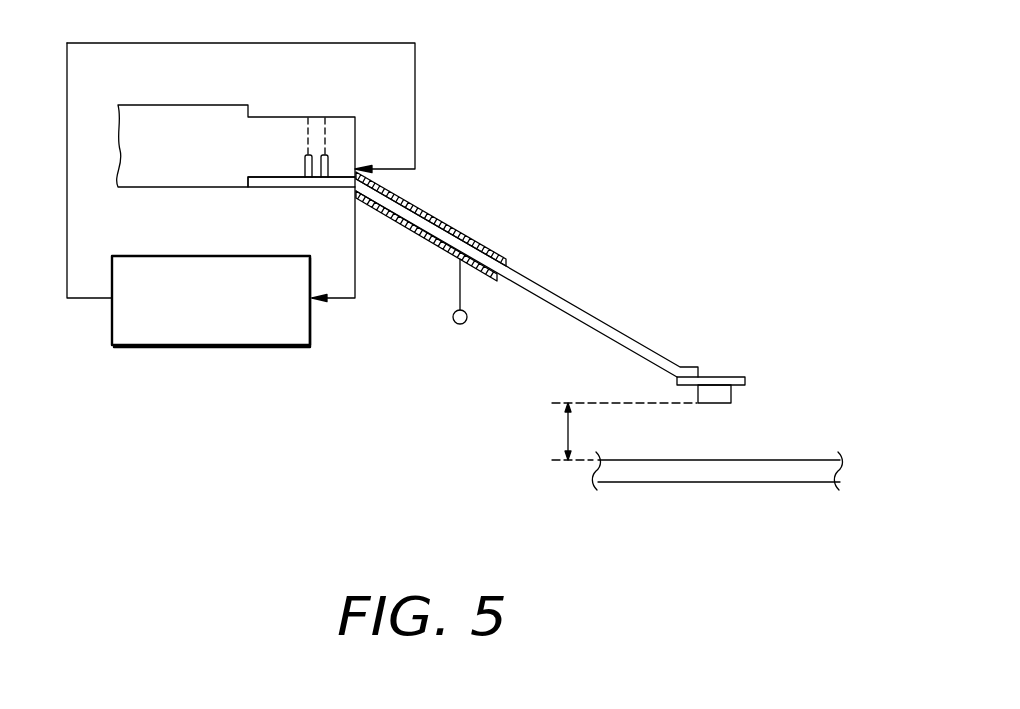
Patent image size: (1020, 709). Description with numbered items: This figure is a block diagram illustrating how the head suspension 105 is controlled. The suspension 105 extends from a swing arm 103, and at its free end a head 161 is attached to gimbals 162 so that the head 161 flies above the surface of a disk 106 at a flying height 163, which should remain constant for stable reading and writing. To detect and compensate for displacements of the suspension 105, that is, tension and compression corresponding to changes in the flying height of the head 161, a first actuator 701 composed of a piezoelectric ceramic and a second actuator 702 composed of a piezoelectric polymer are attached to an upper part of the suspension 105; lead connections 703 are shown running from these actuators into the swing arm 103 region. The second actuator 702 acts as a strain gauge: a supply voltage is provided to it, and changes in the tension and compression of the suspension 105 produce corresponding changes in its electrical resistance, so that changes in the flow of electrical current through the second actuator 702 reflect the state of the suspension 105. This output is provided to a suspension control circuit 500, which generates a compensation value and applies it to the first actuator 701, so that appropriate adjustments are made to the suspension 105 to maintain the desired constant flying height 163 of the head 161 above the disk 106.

The swing arm 103 is at (277, 122).
The suspension 105 is at (300, 187).
The disk 106 is at (725, 482).
The head 161 is at (731, 395).
The gimbals 162 is at (730, 377).
The flying height 163 is at (598, 431).
The suspension control circuit 500 is at (212, 347).
The first actuator 701 is at (467, 240).
The second actuator 702 is at (412, 229).
The lead electrodes 703 is at (310, 153).